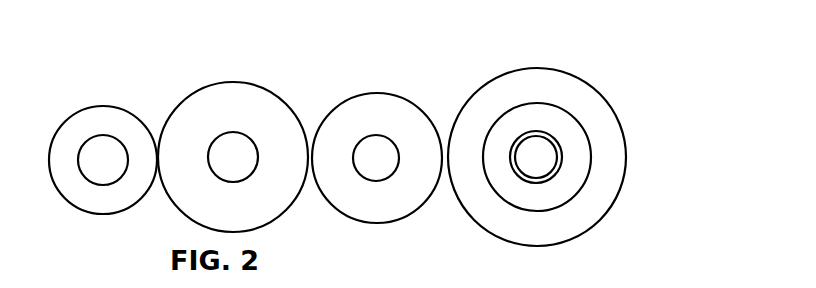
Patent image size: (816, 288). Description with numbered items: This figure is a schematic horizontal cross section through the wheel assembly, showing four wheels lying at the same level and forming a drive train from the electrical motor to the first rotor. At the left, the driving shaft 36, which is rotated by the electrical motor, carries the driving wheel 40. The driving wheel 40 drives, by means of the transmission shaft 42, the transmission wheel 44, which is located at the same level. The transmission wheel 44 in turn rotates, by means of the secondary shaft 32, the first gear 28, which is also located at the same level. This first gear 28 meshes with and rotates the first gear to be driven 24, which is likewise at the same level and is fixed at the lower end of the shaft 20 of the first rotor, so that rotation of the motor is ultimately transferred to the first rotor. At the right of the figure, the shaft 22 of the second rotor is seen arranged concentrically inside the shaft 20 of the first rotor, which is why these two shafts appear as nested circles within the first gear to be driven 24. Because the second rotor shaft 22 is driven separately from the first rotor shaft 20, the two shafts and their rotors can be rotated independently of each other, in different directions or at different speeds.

The shaft of the first rotor 20 is at (568, 132).
The shaft of the second rotor 22 is at (536, 157).
The first gear to be driven 24 is at (603, 173).
The first gear 28 is at (395, 125).
The secondary shaft 32 is at (376, 158).
The driving shaft 36 is at (103, 160).
The driving wheel 40 is at (115, 127).
The transmission shaft 42 is at (233, 157).
The transmission wheel 44 is at (263, 113).